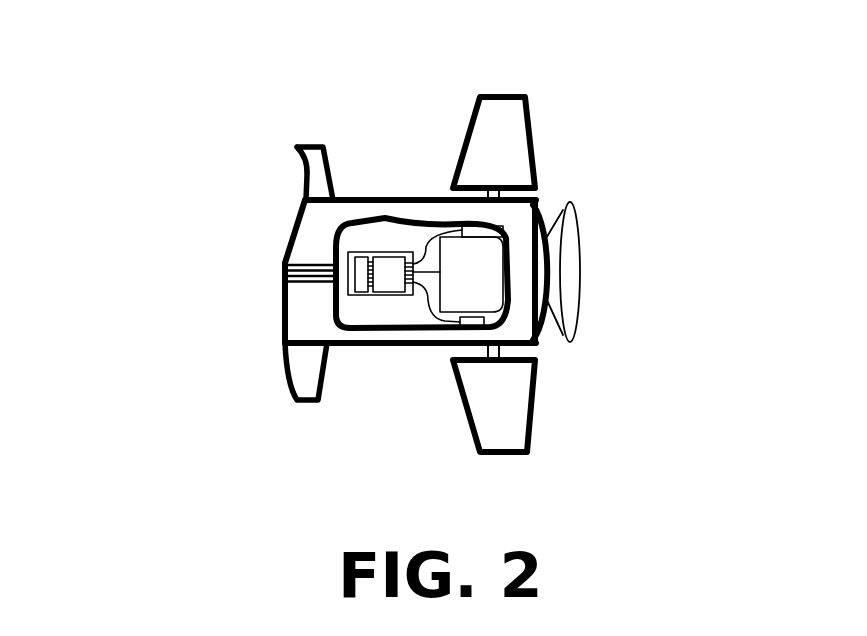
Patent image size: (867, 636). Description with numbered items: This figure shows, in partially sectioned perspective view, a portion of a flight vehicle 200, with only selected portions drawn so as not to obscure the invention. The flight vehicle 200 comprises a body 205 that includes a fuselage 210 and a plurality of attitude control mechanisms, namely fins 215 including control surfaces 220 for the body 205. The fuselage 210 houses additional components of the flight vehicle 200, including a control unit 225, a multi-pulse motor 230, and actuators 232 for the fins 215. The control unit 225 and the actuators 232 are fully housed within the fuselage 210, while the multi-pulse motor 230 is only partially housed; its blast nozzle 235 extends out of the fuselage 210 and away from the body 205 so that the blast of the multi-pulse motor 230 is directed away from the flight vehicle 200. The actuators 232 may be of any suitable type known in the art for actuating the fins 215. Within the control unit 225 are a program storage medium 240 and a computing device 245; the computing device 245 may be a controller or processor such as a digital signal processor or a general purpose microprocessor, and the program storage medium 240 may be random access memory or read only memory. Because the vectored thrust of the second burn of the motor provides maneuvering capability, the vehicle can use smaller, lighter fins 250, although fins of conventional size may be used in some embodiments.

The flight vehicle 200 is at (146, 55).
The body 205 is at (258, 165).
The fuselage 210 is at (315, 226).
The fins 215 is at (454, 112).
The control surfaces 220 is at (508, 132).
The control unit 225 is at (355, 265).
The multi-pulse motor 230 is at (490, 296).
The actuators 232 is at (475, 236).
The blast nozzle 235 is at (580, 259).
The program storage medium 240 is at (350, 288).
The computing device 245 is at (385, 292).
The fins 250 is at (311, 150).